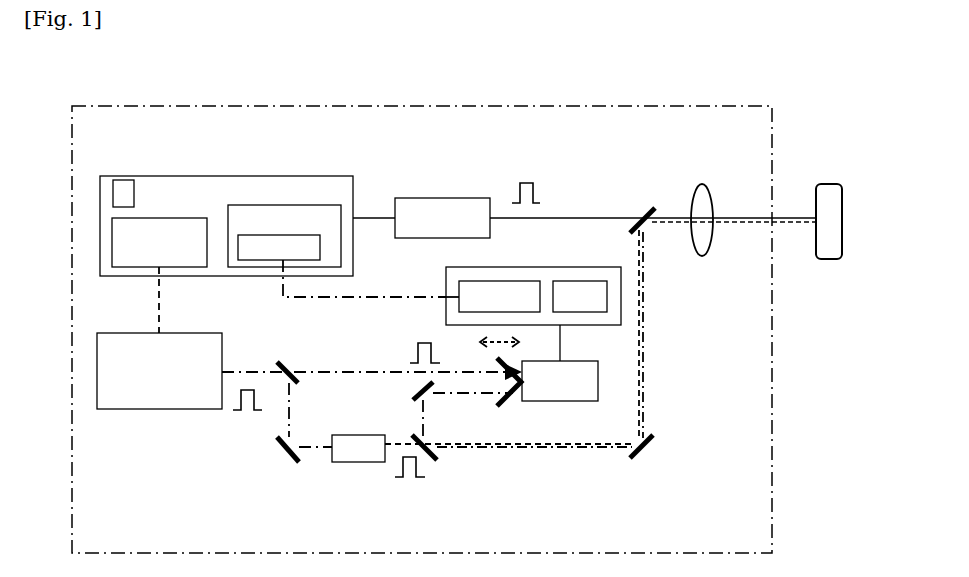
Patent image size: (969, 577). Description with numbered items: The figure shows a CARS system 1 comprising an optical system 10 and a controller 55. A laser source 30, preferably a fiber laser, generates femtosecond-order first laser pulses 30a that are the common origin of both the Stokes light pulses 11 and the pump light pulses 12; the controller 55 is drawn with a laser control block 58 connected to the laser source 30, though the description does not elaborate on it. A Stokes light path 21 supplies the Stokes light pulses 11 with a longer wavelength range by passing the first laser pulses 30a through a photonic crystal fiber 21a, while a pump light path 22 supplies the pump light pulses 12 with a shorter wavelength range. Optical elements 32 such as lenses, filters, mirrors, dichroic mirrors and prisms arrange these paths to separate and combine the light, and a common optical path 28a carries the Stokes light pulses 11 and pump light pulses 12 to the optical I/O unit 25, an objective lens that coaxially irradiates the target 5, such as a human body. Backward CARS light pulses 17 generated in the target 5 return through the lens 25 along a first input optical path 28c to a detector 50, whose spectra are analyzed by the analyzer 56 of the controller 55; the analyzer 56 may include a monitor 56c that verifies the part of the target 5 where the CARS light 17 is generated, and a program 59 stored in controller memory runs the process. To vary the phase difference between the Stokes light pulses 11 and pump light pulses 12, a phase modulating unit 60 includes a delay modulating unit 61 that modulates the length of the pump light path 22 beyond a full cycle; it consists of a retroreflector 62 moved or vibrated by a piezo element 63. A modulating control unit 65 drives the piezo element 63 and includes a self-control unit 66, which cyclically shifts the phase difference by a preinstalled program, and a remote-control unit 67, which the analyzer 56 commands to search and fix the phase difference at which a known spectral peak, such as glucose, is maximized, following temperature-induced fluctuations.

The system 1 is at (718, 113).
The target 5 is at (839, 165).
The optical system 10 is at (672, 337).
The Stokes light pulses 11 is at (418, 465).
The pump light pulses 12 is at (420, 343).
The CARS light pulses 17 is at (533, 192).
The Stokes light path 21 is at (325, 476).
The photonic crystal fiber 21a is at (372, 462).
The pump light path 22 is at (372, 348).
The optical I/O unit 25 is at (703, 190).
The common optical path 28a is at (682, 457).
The first input optical path 28c is at (647, 181).
The laser source 30 is at (167, 420).
The first laser pulses 30a is at (245, 412).
The optical elements 32 is at (686, 423).
The detector 50 is at (448, 198).
The controller 55 is at (258, 176).
The analyzer 56 is at (322, 205).
The monitor 56c is at (242, 260).
The laser control unit 58 is at (197, 267).
The program 59 is at (122, 180).
The phase modulating unit 60 is at (524, 414).
The delay modulating unit 61 is at (553, 411).
The retroreflector 62 is at (498, 400).
The piezo element 63 is at (583, 400).
The modulating control unit 65 is at (547, 275).
The self-control unit 66 is at (585, 281).
The remote-control unit 67 is at (490, 281).